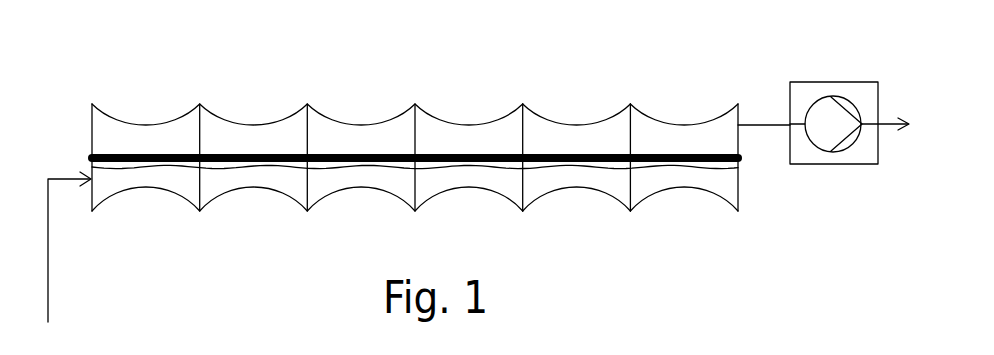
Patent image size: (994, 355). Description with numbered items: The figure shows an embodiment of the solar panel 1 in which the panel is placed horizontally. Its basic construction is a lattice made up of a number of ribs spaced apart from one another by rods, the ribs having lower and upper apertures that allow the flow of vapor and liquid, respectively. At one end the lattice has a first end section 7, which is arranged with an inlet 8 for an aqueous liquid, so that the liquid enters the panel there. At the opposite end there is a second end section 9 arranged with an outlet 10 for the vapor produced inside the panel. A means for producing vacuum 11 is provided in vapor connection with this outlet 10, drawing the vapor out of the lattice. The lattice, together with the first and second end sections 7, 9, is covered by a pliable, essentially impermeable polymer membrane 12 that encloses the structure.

The solar panel 1 is at (237, 72).
The first end section 7 is at (92, 130).
The inlet 8 is at (48, 231).
The second end section 9 is at (738, 197).
The outlet 10 is at (758, 125).
The pump 11 is at (817, 82).
The pliable, essentially impermeable polymer membrane 12 is at (538, 112).